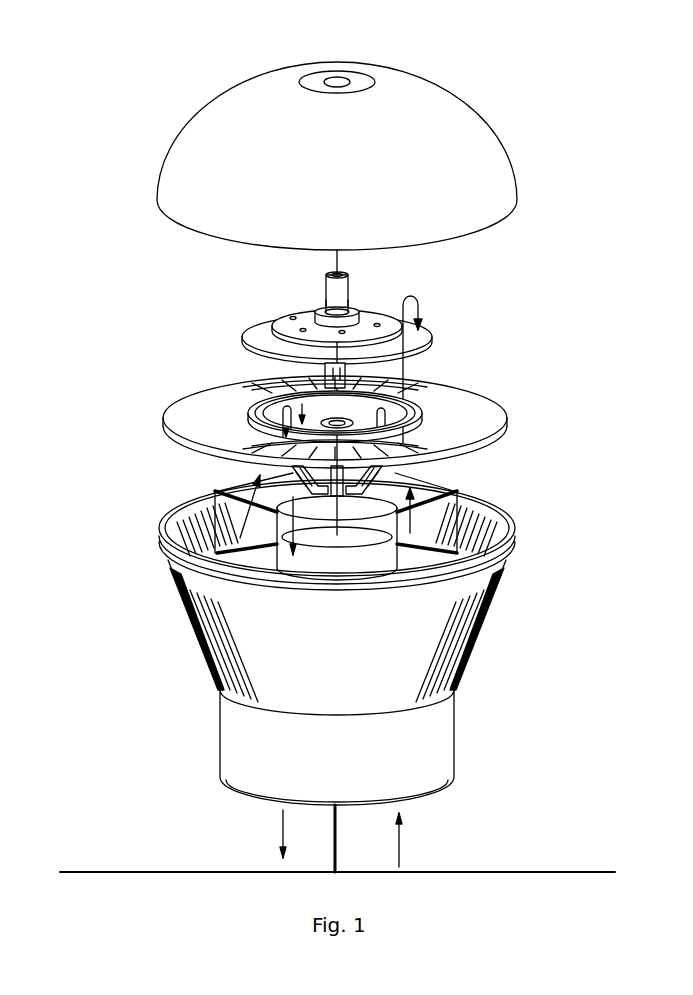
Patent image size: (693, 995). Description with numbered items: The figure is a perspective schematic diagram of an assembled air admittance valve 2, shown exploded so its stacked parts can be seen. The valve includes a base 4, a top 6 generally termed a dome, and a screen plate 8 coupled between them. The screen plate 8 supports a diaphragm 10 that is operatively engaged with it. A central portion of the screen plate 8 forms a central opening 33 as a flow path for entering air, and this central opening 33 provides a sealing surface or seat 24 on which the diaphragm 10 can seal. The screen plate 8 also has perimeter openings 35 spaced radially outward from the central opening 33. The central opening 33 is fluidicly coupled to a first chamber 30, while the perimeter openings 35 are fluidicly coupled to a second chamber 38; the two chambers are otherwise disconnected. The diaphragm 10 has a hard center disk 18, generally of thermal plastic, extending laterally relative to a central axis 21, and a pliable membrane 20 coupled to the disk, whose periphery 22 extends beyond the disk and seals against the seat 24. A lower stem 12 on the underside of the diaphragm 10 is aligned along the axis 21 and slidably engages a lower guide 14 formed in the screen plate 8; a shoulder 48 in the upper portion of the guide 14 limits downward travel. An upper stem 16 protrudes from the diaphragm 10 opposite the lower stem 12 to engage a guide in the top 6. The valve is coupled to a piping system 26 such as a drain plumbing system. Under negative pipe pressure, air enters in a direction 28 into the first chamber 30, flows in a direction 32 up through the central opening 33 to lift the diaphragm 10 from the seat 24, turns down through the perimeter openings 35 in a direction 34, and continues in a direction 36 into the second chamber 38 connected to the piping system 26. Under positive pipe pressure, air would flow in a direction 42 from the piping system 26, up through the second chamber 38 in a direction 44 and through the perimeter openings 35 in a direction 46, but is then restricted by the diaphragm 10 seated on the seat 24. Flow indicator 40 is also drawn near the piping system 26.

The air admittance valve 2 is at (532, 167).
The base 4 is at (332, 666).
The top 6 is at (517, 197).
The screen plate 8 is at (336, 417).
The diaphragm 10 is at (331, 387).
The lower stem 12 is at (397, 379).
The lower guide 14 is at (425, 415).
The upper stem 16 is at (348, 288).
The hard center disk 18 is at (289, 322).
The pliable membrane 20 is at (257, 338).
The central axis 21 is at (323, 280).
The periphery 22 is at (438, 332).
The seat 24 is at (350, 425).
The piping system 26 is at (158, 871).
The direction of air flow 28 is at (197, 648).
The first chamber 30 is at (180, 513).
The flow direction 32 is at (222, 492).
The central opening 33 is at (338, 427).
The flow direction 34 is at (335, 411).
The perimeter openings 35 is at (225, 456).
The flow direction 36 is at (292, 528).
The second chamber 38 is at (275, 541).
The downward airflow 40 is at (283, 830).
The flow direction 42 is at (399, 848).
The flow direction 44 is at (460, 497).
The flow direction 46 is at (404, 362).
The shoulder 48 is at (315, 422).